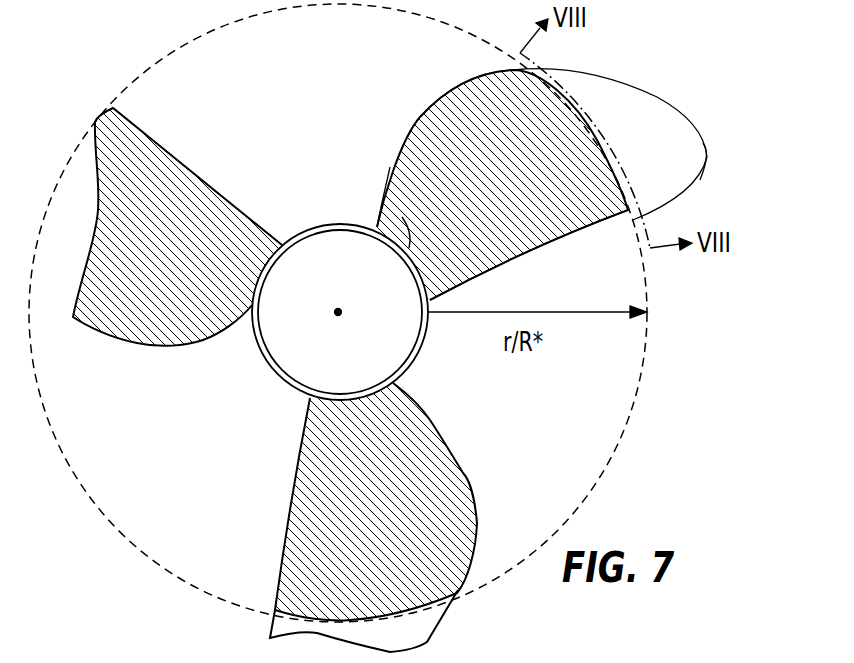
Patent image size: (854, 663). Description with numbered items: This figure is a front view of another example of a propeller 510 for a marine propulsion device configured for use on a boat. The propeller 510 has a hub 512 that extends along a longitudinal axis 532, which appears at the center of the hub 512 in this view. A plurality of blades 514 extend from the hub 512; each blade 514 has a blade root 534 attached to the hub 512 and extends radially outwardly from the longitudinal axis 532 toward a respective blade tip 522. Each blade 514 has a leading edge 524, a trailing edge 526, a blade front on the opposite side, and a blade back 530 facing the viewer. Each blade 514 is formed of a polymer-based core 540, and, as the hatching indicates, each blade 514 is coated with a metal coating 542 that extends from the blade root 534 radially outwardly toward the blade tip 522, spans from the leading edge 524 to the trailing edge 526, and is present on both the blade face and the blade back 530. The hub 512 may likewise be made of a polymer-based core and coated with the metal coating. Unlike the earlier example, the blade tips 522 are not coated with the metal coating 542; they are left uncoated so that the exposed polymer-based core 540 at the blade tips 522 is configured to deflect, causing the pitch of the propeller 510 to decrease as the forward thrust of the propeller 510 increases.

The propeller 510 is at (648, 428).
The hub 512 is at (310, 226).
The blade 514 is at (160, 323).
The blade tip 522 is at (708, 154).
The leading edge 524 is at (460, 87).
The trailing edge 526 is at (577, 237).
The blade back 530 is at (392, 528).
The longitudinal axis 532 is at (330, 312).
The blade root 534 is at (380, 187).
The polymer-based core 540 is at (660, 127).
The metal coating 542 is at (427, 128).